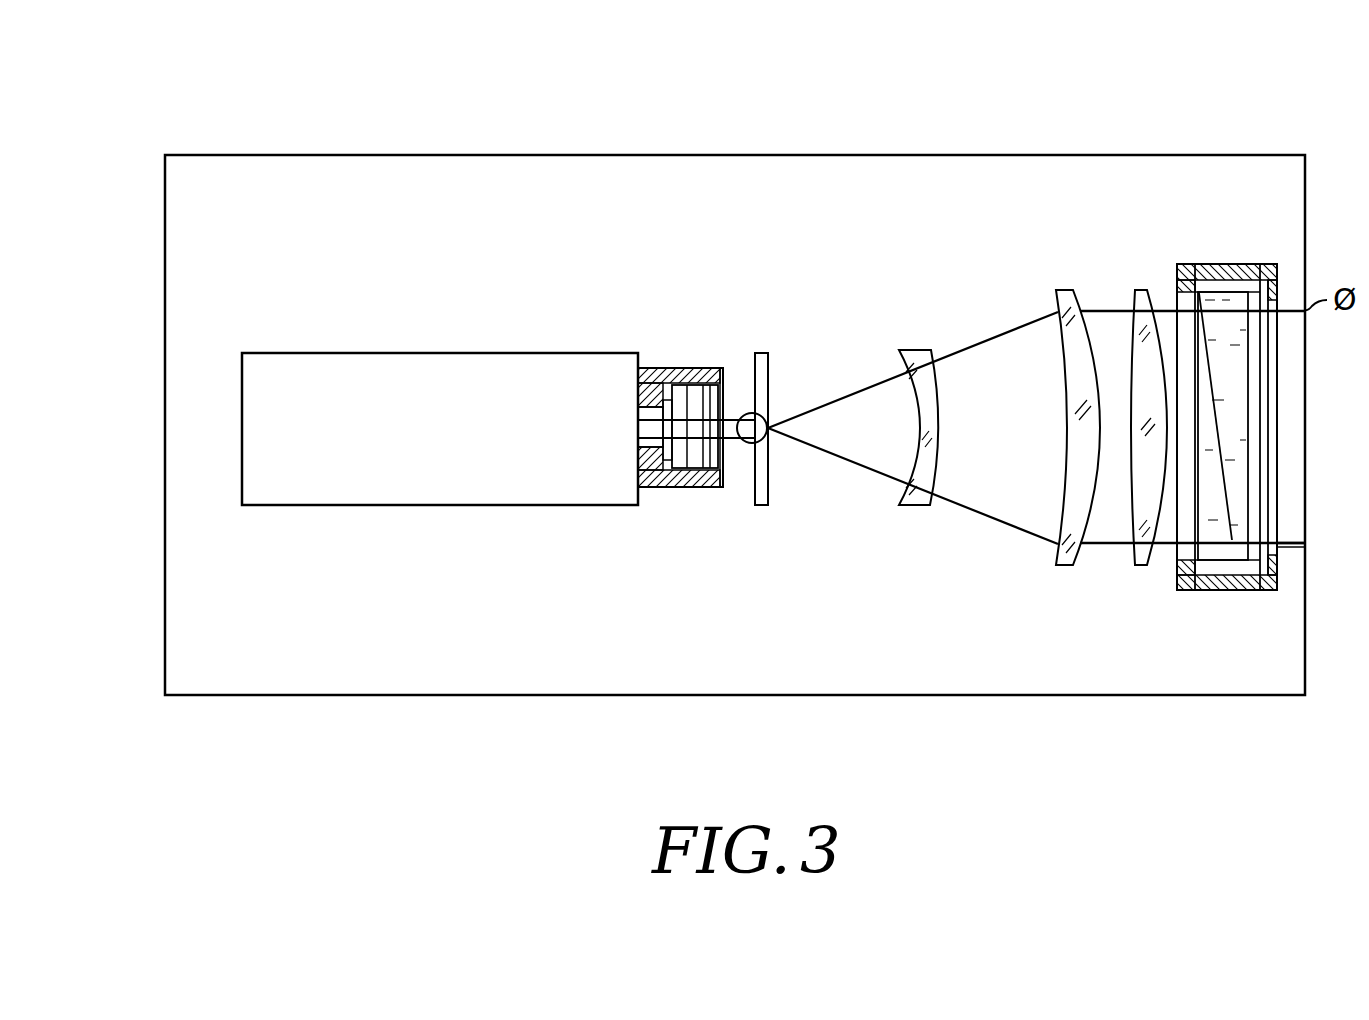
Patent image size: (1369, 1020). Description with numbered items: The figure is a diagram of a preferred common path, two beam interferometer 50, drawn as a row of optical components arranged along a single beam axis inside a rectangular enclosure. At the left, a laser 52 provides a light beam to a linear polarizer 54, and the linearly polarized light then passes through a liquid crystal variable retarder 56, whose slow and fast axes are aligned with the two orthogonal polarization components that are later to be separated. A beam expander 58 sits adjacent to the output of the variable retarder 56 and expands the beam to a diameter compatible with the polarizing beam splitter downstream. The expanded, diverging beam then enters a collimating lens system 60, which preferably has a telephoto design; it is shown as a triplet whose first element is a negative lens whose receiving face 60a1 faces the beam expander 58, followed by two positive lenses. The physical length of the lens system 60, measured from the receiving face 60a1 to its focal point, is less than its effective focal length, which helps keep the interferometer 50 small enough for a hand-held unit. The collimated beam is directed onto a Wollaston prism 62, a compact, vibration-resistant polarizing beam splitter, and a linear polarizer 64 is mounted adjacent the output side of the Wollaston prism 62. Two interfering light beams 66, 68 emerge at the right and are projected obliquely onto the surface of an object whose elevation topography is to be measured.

The common path, two beam interferometer 50 is at (520, 153).
The laser 52 is at (440, 429).
The linear polarizer 54 is at (648, 447).
The liquid crystal variable retarder 56 is at (677, 382).
The beam expander 58 is at (759, 353).
The collimating lens system 60 is at (974, 377).
The receiving face 60a1 is at (887, 443).
The Wollaston prism 62 is at (1237, 590).
The linear polarizer 64 is at (1260, 377).
The interfering light beam 66 is at (1293, 538).
The interfering light beam 68 is at (1292, 549).